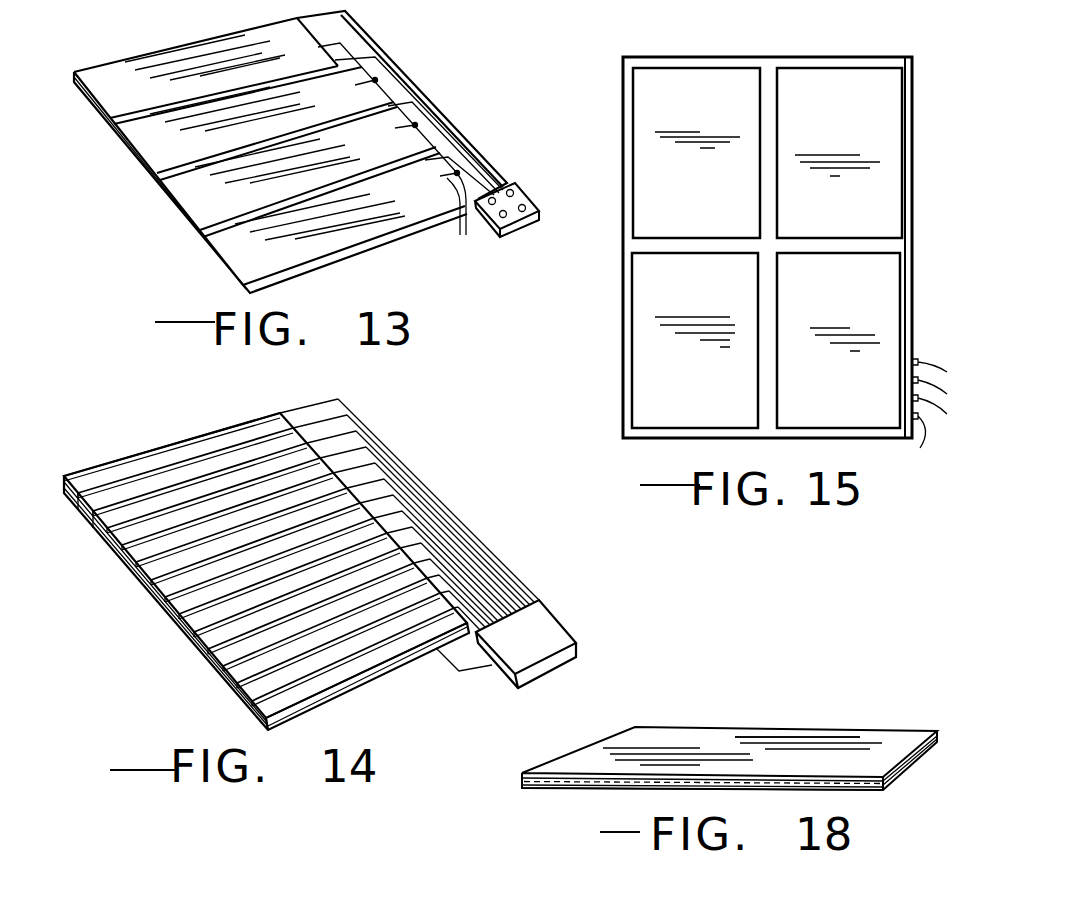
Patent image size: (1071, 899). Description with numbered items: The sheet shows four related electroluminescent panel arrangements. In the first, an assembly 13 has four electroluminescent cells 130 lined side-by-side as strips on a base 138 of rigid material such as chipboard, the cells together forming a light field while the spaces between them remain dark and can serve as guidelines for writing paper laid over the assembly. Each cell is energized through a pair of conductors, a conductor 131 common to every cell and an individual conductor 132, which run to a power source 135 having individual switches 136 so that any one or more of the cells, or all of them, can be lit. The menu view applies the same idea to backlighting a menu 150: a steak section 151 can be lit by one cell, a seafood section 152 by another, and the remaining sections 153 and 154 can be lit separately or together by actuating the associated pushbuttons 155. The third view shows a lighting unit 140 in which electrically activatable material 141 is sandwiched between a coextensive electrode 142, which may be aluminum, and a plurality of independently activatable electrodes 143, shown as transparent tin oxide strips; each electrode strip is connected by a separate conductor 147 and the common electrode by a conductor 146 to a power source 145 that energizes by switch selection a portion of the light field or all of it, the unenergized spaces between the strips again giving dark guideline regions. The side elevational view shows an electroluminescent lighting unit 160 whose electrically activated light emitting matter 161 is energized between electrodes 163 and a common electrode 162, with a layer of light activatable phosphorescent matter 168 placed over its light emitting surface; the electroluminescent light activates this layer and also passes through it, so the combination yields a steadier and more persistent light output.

In FIG. 13, the sensor panel assembly 13 is at (224, 268).
In FIG. 13, the electroluminescent cells 130 is at (145, 133).
In FIG. 13, the common conductor 131 is at (471, 216).
In FIG. 13, the conductor 132 is at (486, 172).
In FIG. 13, the power source 135 is at (520, 187).
In FIG. 13, the switches 136 is at (496, 234).
In FIG. 13, the base 138 is at (330, 262).
In FIG. 14, the lighting unit 140 is at (237, 694).
In FIG. 14, the electrically activatable material 141 is at (202, 650).
In FIG. 14, the coextensive electrode 142 is at (160, 597).
In FIG. 14, the electrodes 143 is at (101, 523).
In FIG. 14, the power source 145 is at (567, 630).
In FIG. 14, the conductor 146 is at (464, 671).
In FIG. 14, the conductor 147 is at (473, 548).
In FIG. 15, the menu 150 is at (626, 80).
In FIG. 15, the steak section 151 is at (648, 207).
In FIG. 15, the seafood section 152 is at (873, 190).
In FIG. 15, the remaining section 153 is at (647, 333).
In FIG. 15, the dessert section 154 is at (880, 313).
In FIG. 15, the pushbuttons 155 is at (923, 417).
In FIG. 18, the electroluminescent lighting unit 160 is at (700, 752).
In FIG. 18, the electrically activated light emitting matter 161 is at (521, 783).
In FIG. 18, the common electrode 162 is at (545, 789).
In FIG. 18, the electrodes 163 is at (570, 778).
In FIG. 18, the layer of light activatable phosphorescent matter 168 is at (817, 737).